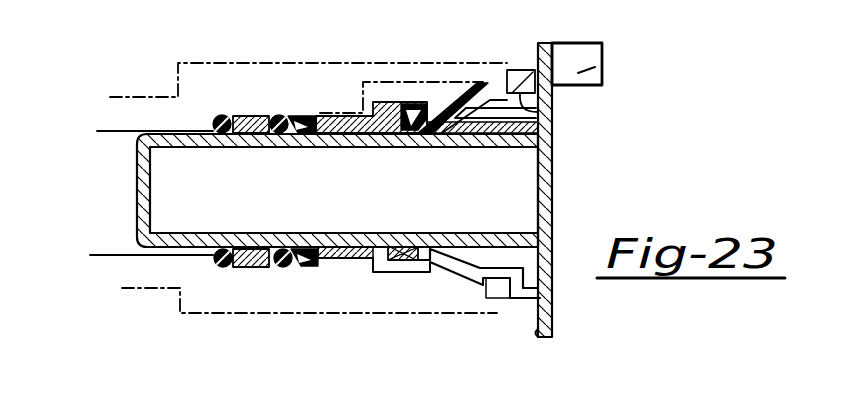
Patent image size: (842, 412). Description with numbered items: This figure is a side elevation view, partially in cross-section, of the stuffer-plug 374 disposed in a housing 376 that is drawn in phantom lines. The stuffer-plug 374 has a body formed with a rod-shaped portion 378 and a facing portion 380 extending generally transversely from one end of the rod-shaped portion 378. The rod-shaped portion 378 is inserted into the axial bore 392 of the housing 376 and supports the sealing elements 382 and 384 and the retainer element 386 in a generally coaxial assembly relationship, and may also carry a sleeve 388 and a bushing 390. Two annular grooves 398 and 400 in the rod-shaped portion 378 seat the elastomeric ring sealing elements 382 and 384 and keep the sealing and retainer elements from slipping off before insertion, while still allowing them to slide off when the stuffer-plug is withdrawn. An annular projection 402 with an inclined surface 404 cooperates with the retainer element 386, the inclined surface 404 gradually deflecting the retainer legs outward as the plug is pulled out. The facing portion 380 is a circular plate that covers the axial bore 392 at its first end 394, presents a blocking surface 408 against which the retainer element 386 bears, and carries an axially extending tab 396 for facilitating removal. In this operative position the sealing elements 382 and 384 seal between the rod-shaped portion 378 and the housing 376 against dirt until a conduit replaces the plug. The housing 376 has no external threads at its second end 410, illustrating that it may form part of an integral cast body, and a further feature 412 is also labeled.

The stuffer-plug 374 is at (367, 150).
The housing 376 is at (283, 88).
The rod-shaped portion 378 is at (540, 152).
The facing portion 380 is at (540, 292).
The sealing element 382 is at (210, 150).
The sealing element 384 is at (284, 150).
The retainer element 386 is at (540, 115).
The sleeve 388 is at (265, 150).
The bushing 390 is at (291, 268).
The axial bore 392 is at (382, 292).
The first end 394 is at (503, 300).
The tab 396 is at (603, 58).
The annular groove 398 is at (223, 267).
The annular groove 400 is at (285, 268).
The annular projection 402 is at (416, 148).
The inclined surface 404 is at (412, 248).
The blocking surface 408 is at (555, 337).
The second end 410 is at (137, 113).
The housing bore 412 is at (293, 333).